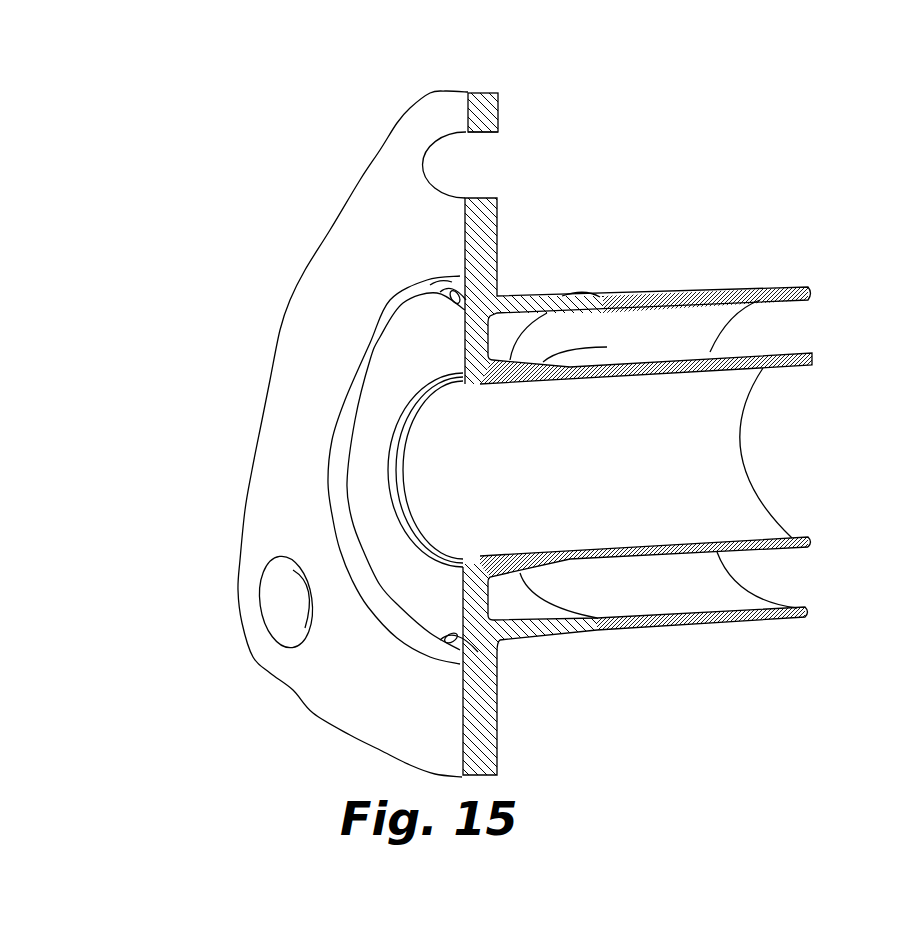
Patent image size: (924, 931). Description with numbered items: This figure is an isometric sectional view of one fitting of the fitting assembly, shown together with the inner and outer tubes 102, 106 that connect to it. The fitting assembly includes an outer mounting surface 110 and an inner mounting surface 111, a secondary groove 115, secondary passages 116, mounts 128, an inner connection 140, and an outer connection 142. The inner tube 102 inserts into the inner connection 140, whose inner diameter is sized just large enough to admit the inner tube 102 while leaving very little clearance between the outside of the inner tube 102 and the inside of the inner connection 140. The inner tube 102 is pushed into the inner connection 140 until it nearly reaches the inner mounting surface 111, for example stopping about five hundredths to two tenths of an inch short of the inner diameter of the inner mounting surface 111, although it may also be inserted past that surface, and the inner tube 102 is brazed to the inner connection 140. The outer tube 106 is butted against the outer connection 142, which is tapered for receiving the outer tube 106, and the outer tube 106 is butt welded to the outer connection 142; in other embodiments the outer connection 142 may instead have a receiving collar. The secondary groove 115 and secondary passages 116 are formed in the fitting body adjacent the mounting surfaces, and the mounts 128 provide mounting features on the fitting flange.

The inner tube 102 is at (732, 526).
The outer tube 106 is at (747, 598).
The outer mounting surface 110 is at (322, 292).
The inner mounting surface 111 is at (386, 400).
The secondary groove 115 is at (428, 283).
The secondary passages 116 is at (456, 292).
The mounts 128 is at (449, 106).
The inner connection 140 is at (550, 350).
The outer connection 142 is at (557, 295).